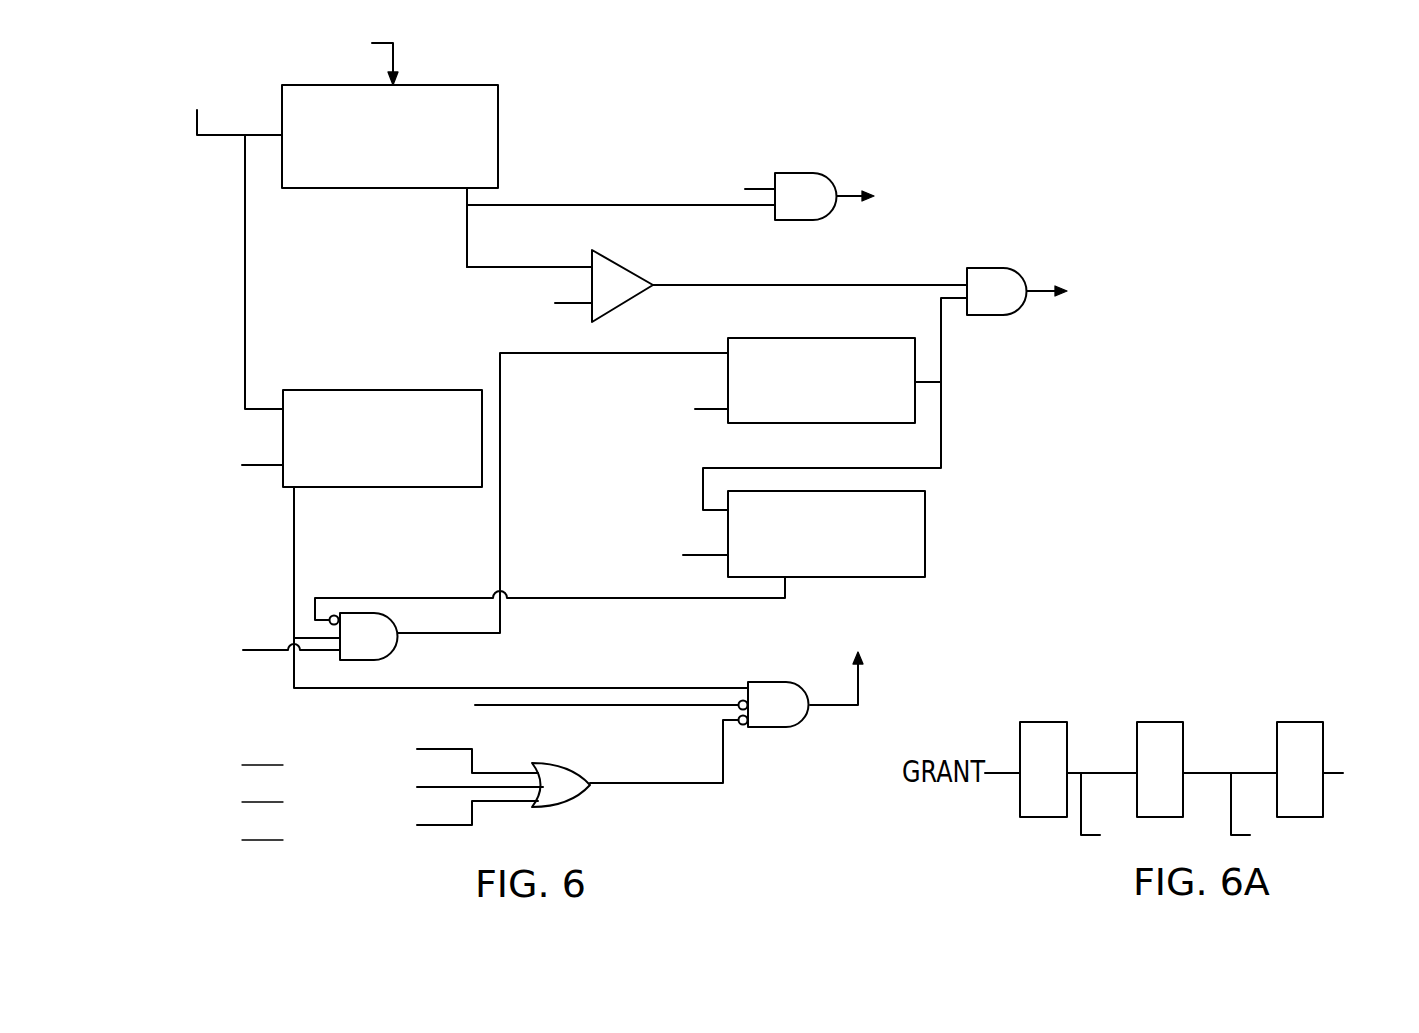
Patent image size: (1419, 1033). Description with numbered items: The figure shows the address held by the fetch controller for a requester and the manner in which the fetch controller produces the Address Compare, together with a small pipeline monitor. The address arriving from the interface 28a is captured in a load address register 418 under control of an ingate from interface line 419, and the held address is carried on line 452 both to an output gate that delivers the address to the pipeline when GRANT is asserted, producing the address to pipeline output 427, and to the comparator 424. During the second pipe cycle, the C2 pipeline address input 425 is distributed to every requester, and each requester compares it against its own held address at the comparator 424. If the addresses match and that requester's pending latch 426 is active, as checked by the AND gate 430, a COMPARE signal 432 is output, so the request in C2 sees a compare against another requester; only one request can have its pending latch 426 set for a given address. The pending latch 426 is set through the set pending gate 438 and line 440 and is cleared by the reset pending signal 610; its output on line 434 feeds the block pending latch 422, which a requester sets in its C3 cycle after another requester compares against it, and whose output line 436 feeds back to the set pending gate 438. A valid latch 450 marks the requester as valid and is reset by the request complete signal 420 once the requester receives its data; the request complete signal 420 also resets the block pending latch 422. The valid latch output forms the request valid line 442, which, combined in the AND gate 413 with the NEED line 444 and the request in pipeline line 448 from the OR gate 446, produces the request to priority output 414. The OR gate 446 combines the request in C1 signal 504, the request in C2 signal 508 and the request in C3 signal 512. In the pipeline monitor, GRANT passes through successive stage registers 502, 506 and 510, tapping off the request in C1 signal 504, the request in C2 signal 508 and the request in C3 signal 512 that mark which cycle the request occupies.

In FIG. 6, the address from interface input 28a is at (390, 60).
In FIG. 6, the load address register 418 is at (498, 107).
In FIG. 6, the ingate from interface line 419 is at (210, 137).
In FIG. 6, the request complete signal 420 is at (263, 468).
In FIG. 6, the block pending latch 422 is at (925, 538).
In FIG. 6, the compare 424 is at (620, 264).
In FIG. 6, the C2 pipeline address input 425 is at (557, 304).
In FIG. 6, the pending latch 426 is at (803, 221).
In FIG. 6, the address to pipeline output 427 is at (847, 192).
In FIG. 6, the address compare AND gate 430 is at (1012, 311).
In FIG. 6, the COMPARE signal 432 is at (1044, 288).
In FIG. 6, the pending signal line 434 is at (941, 430).
In FIG. 6, the block pending output line 436 is at (785, 599).
In FIG. 6, the set pending AND gate 438 is at (398, 626).
In FIG. 6, the set pending line 440 is at (500, 463).
In FIG. 6, the request valid line 442 is at (330, 690).
In FIG. 6, the need line 444 is at (555, 707).
In FIG. 6, the request in pipeline OR gate 446 is at (560, 809).
In FIG. 6, the request in pipeline line 448 is at (723, 784).
In FIG. 6, the valid latch 450 is at (343, 389).
In FIG. 6, the load address output line 452 is at (545, 203).
In FIG. 6A, the pipeline stage register 502 is at (1070, 728).
In FIG. 6, the request in C1 signal 504 is at (390, 752).
In FIG. 6A, the request in C1 signal 504 is at (1113, 769).
In FIG. 6A, the pipeline stage register 506 is at (1187, 731).
In FIG. 6, the request in C2 signal 508 is at (268, 652).
In FIG. 6A, the request in C2 signal 508 is at (1253, 769).
In FIG. 6A, the pipeline stage register 510 is at (1293, 720).
In FIG. 6, the request in C3 signal 512 is at (390, 821).
In FIG. 6A, the request in C3 signal 512 is at (1338, 772).
In FIG. 6, the reset pending signal 610 is at (712, 411).
In FIG. 6, the request to priority AND gate 413 is at (770, 728).
In FIG. 6, the request to priority output 414 is at (815, 709).